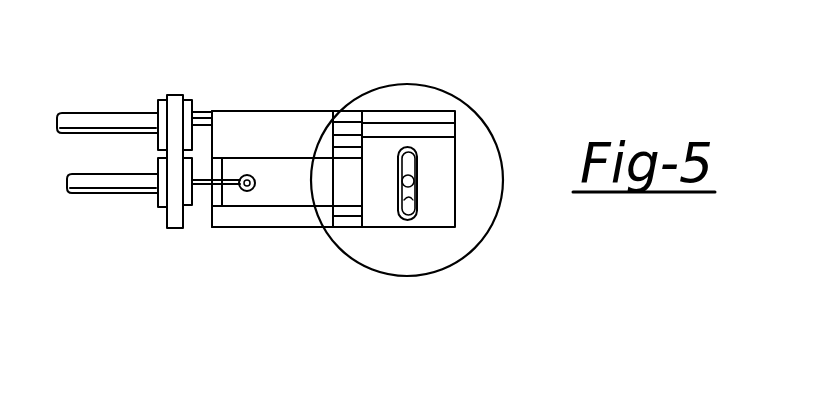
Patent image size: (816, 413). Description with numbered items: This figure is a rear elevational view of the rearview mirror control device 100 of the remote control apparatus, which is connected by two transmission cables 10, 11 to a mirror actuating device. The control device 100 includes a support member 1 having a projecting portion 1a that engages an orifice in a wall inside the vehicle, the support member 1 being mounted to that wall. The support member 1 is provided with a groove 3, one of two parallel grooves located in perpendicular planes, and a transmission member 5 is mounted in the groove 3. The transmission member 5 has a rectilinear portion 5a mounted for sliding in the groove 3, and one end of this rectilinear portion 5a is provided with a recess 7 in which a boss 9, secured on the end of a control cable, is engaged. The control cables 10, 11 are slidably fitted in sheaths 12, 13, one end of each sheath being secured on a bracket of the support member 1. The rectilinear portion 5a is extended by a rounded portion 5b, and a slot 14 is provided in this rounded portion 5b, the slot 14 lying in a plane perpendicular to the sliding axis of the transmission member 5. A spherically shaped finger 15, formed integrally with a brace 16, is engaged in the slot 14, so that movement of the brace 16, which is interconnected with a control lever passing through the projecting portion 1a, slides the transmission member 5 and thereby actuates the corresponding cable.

The support member 1 is at (208, 228).
The projecting portion 1a is at (388, 108).
The groove 3 is at (292, 194).
The transmission member 5 is at (302, 179).
The rectilinear portion 5a is at (280, 173).
The rounded portion 5b is at (440, 173).
The recess 7 is at (250, 192).
The boss 9 is at (247, 175).
The transmission cable 10 is at (200, 108).
The transmission cable 11 is at (198, 163).
The sheath 12 is at (103, 120).
The sheath 13 is at (116, 195).
The slot 14 is at (417, 160).
The spherically shaped finger 15 is at (412, 183).
The brace 16 is at (412, 197).
The rearview mirror control device 100 is at (447, 81).